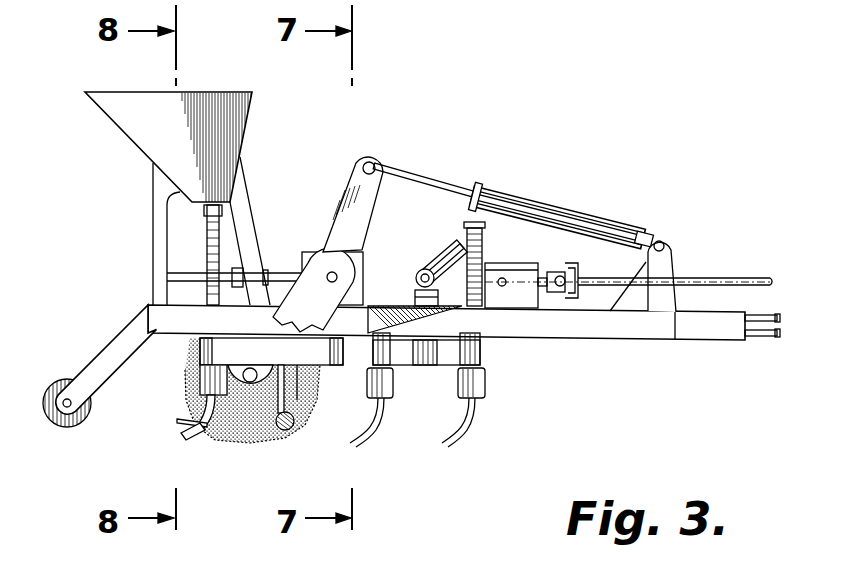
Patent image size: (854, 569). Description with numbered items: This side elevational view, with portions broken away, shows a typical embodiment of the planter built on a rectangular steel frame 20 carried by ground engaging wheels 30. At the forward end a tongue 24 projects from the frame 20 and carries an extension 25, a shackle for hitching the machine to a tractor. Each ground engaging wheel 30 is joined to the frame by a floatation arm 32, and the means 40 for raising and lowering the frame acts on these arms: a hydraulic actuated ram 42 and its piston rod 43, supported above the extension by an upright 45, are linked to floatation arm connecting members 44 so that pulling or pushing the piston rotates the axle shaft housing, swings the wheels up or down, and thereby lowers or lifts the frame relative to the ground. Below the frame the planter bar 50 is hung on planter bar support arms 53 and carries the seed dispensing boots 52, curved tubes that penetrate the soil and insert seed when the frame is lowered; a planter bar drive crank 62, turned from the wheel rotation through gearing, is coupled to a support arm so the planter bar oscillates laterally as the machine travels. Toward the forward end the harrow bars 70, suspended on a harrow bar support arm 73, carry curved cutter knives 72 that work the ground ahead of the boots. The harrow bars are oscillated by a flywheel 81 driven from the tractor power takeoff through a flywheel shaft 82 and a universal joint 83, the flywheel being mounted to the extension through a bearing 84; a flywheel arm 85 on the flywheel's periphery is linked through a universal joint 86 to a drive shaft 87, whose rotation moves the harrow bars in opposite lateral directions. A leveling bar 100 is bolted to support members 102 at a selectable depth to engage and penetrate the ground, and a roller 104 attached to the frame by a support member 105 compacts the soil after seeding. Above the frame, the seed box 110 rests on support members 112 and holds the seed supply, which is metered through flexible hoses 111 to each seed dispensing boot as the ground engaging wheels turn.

The frame 20 is at (163, 337).
The tongue 24 is at (725, 334).
The extension 25 is at (756, 339).
The ground engaging wheels 30 is at (262, 441).
The floatation arm 32 is at (323, 306).
The means for raising and lowering the frame 40 is at (529, 200).
The hydraulic actuated ram 42 is at (621, 228).
The piston rod 43 is at (436, 181).
The floatation arm connecting members 44 is at (357, 252).
The upright 45 is at (666, 260).
The planter bar 50 is at (218, 400).
The seed dispensing boots 52 is at (186, 436).
The planter bar support arms 53 is at (282, 362).
The planter bar drive crank 62 is at (183, 272).
The harrow bars 70 is at (393, 386).
The cutter knives 72 is at (354, 446).
The harrow bar support arm 73 is at (425, 361).
The flywheel 81 is at (483, 236).
The flywheel shaft 82 is at (751, 278).
The universal joint 83 is at (580, 264).
The bearing 84 is at (527, 306).
The flywheel arm 85 is at (466, 241).
The universal joint 86 is at (445, 256).
The drive shaft 87 is at (416, 297).
The leveling bar 100 is at (281, 432).
The support members 102 is at (288, 406).
The roller 104 is at (48, 422).
The support member 105 is at (112, 338).
The seed box 110 is at (165, 128).
The flexible hoses 111 is at (207, 228).
The support members 112 is at (160, 182).